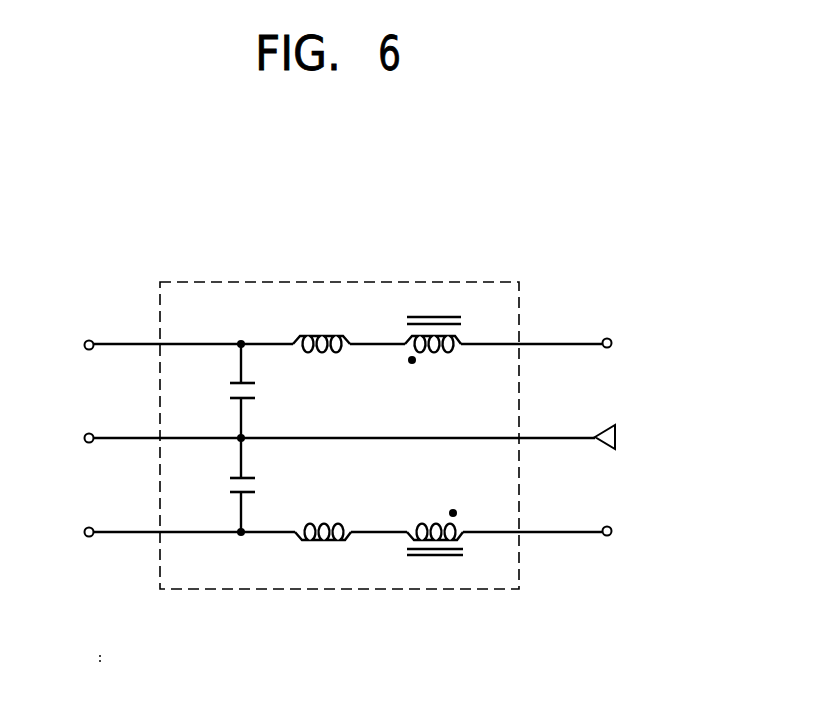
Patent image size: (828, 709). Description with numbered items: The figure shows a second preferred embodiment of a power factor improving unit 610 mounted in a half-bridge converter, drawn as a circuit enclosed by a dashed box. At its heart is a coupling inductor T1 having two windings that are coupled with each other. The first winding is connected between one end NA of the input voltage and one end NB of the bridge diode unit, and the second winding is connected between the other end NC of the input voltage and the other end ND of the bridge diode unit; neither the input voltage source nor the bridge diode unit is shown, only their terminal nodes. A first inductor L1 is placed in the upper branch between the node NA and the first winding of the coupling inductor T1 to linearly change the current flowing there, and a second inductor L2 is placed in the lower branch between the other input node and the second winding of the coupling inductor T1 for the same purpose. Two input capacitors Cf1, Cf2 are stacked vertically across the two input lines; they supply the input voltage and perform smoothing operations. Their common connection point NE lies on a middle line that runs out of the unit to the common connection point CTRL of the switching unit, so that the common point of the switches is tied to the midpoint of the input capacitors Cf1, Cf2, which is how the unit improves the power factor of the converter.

The power factor improving unit 610 is at (340, 280).
The first inductor L1 is at (321, 361).
The second inductor L2 is at (323, 516).
The coupling inductor T1 is at (434, 436).
The input capacitor Cf1 is at (218, 391).
The input capacitor Cf2 is at (218, 485).
The one end of the input voltage NA is at (167, 346).
The one end of the bridge diode unit NB is at (561, 344).
The other end of the input voltage NC is at (168, 533).
The other end of the bridge diode unit ND is at (564, 532).
The common connection point of the input capacitors NE is at (141, 439).
The common connection point of the switching unit CTRL is at (464, 438).